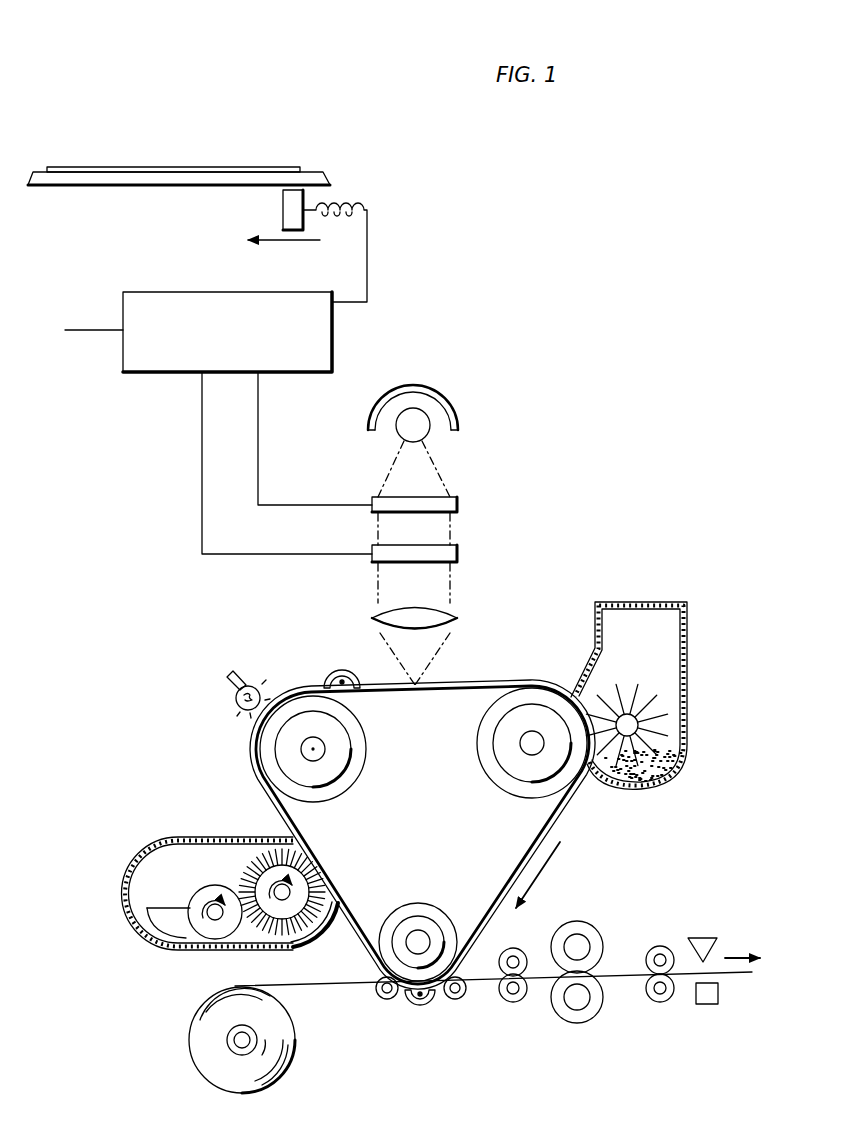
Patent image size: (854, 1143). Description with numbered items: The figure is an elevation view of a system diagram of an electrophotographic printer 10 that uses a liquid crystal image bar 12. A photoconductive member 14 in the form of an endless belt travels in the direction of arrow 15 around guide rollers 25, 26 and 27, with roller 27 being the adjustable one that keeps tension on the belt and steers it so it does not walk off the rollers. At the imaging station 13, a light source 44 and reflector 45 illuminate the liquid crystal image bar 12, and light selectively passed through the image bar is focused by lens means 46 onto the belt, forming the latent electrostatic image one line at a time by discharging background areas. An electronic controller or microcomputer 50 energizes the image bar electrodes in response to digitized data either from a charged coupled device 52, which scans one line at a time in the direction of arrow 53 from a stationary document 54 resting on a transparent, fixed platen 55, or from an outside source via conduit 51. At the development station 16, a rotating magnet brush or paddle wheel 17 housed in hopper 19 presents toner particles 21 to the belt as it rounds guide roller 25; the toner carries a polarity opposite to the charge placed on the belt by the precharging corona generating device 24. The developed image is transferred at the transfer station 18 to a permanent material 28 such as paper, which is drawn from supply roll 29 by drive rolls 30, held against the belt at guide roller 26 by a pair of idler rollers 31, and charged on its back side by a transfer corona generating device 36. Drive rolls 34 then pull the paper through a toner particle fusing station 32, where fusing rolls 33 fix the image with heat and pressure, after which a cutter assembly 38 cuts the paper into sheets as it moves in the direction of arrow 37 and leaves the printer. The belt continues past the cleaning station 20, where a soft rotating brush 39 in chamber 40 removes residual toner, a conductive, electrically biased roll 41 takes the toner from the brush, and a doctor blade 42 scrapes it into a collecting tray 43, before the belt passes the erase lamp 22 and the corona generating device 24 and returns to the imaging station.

The electrophotographic printer 10 is at (561, 408).
The liquid crystal image bar 12 is at (470, 530).
The imaging station 13 is at (466, 592).
The photoconductive member 14 is at (531, 686).
The arrow 15 is at (548, 862).
The development station 16 is at (655, 688).
The rotating magnet brush or paddle wheel 17 is at (646, 700).
The transfer station 18 is at (437, 1021).
The hopper 19 is at (681, 600).
The cleaning station 20 is at (214, 879).
The toner particles 21 is at (660, 776).
The erase lamp 22 is at (238, 706).
The precharging corona generating device 24 is at (328, 676).
The guide roller 25 is at (502, 775).
The guide roller 26 is at (461, 876).
The guide roller 27 is at (346, 771).
The permanent material 28 is at (620, 973).
The supply roll 29 is at (205, 1043).
The drive rolls 30 is at (505, 1000).
The idler rollers 31 is at (385, 1000).
The toner particle fusing station 32 is at (582, 1001).
The fusing rolls 33 is at (592, 1016).
The drive rolls 34 is at (665, 946).
The transfer corona generating device 36 is at (420, 1010).
The arrow 37 is at (733, 957).
The cutter assembly 38 is at (752, 897).
The soft rotating brush 39 is at (270, 840).
The chamber 40 is at (180, 836).
The conductive, electrically biased roll 41 is at (218, 890).
The doctor blade 42 is at (190, 905).
The collecting tray 43 is at (160, 940).
The light source 44 is at (403, 441).
The reflector 45 is at (450, 417).
The lens means 46 is at (458, 621).
The electronic controller or microcomputer 50 is at (336, 366).
The conduit 51 is at (95, 328).
The charged coupled device (CCD) 52 is at (282, 208).
The arrow 53 is at (282, 246).
The stationary document 54 is at (232, 166).
The transparent, fixed platen 55 is at (325, 174).